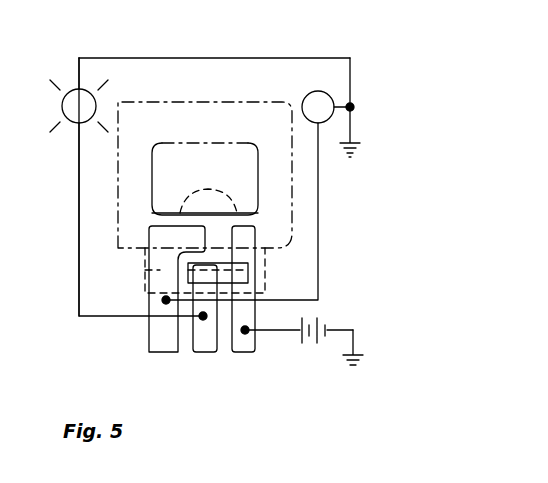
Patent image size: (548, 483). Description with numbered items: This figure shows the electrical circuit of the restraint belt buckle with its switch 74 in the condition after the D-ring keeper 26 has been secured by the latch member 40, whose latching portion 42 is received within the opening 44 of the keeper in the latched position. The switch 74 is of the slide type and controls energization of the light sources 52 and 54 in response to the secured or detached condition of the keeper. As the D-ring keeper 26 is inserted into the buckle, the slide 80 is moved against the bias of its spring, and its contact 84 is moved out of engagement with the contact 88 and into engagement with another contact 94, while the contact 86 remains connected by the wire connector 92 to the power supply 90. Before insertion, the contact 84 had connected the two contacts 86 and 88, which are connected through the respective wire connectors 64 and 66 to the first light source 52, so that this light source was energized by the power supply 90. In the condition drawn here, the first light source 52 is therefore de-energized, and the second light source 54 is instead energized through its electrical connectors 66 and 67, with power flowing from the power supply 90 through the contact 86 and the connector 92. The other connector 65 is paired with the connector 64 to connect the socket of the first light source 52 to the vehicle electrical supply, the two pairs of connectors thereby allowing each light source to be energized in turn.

The electrical connector 67 is at (228, 58).
The light source 54 is at (67, 93).
The light source 52 is at (324, 92).
The electrical connector 65 is at (351, 102).
The latch member 40 is at (177, 195).
The latching portion 42 is at (180, 211).
The opening 44 is at (249, 186).
The wire connector 64 is at (321, 238).
The D-ring keeper 26 is at (296, 239).
The slide 80 is at (143, 265).
The switch 74 is at (137, 275).
The wire connector 66 is at (77, 303).
The contact 84 is at (224, 288).
The contact 88 is at (160, 340).
The contact 94 is at (207, 343).
The contact 86 is at (242, 345).
The wire connector 92 is at (290, 333).
The power supply 90 is at (329, 335).